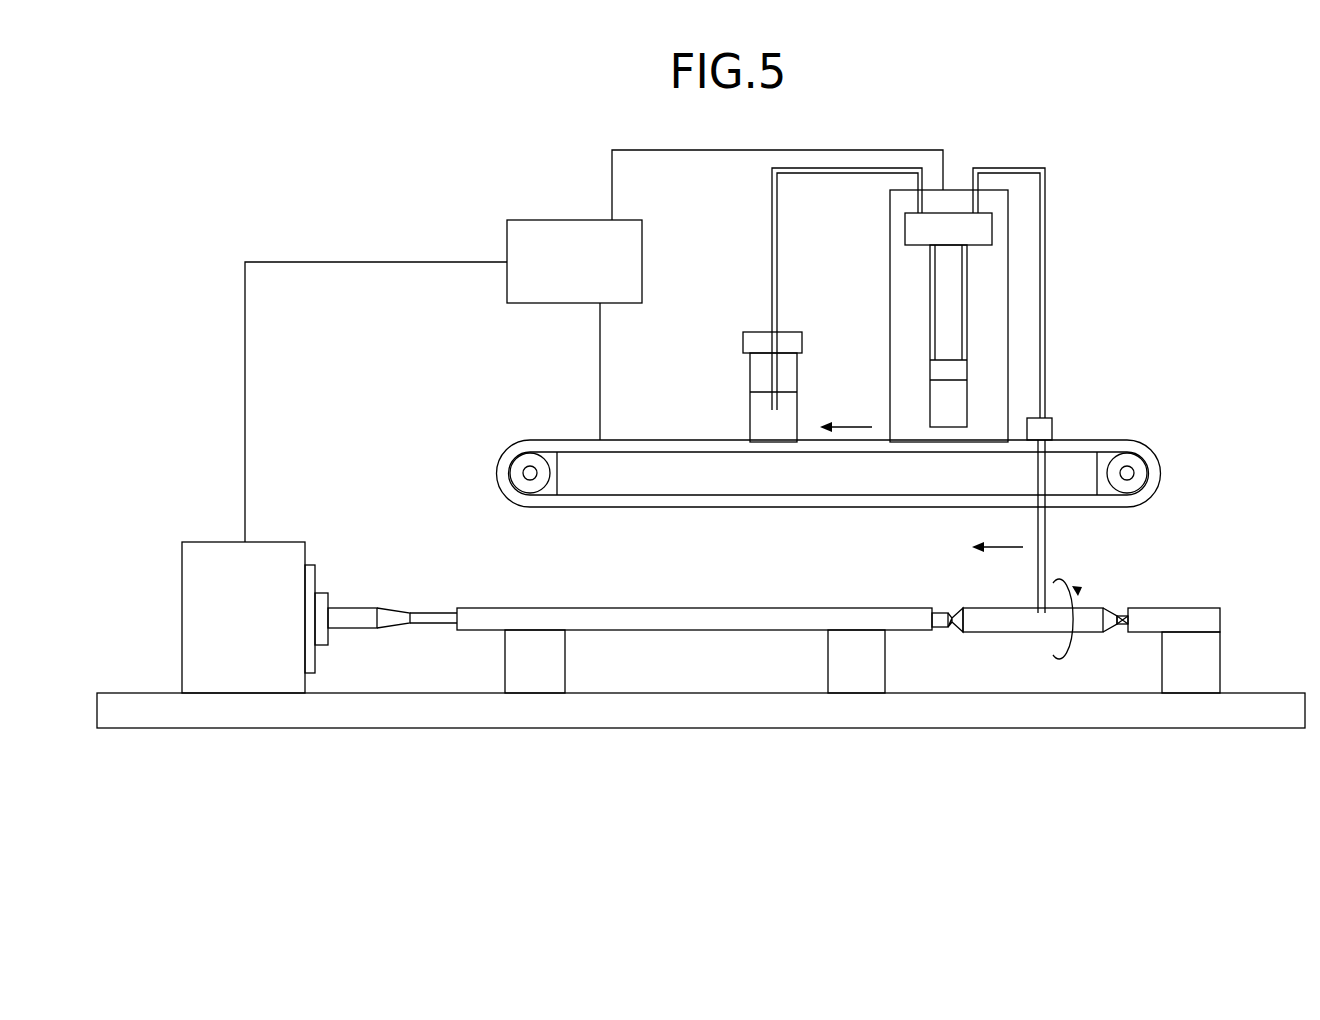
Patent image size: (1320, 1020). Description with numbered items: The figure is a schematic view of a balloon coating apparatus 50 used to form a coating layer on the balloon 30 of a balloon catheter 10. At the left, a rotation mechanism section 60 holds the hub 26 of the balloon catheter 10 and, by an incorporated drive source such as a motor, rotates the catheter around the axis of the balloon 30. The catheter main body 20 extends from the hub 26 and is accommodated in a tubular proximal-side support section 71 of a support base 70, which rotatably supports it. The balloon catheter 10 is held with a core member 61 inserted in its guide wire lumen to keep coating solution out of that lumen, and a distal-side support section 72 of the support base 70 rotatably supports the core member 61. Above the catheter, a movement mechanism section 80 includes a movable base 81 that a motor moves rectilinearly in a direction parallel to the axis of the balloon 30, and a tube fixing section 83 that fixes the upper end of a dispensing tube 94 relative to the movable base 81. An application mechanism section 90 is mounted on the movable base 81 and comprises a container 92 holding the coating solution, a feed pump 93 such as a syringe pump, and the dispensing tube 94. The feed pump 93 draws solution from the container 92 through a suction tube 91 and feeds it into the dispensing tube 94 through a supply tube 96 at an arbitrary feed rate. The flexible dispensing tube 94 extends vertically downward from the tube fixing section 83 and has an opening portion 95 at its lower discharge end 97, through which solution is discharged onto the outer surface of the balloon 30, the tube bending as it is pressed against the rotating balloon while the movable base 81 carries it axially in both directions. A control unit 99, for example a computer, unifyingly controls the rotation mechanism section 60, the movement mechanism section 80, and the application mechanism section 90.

The balloon coating apparatus 50 is at (216, 198).
The control unit 99 is at (563, 214).
The application mechanism section 90 is at (1055, 213).
The suction tube 91 is at (770, 232).
The container 92 is at (750, 360).
The feed pump 93 is at (930, 290).
The supply tube 96 is at (1048, 278).
The tube fixing section 83 is at (1042, 427).
The movable base 81 is at (1115, 447).
The movement mechanism section 80 is at (1149, 444).
The rotation mechanism section 60 is at (193, 550).
The balloon catheter 10 is at (439, 600).
The proximal-side support section 71 is at (533, 618).
The hub 26 is at (357, 618).
The catheter main body 20 is at (935, 612).
The dispensing tube 94 is at (1037, 570).
The discharge end 97 is at (1027, 612).
The core member 61 is at (1140, 617).
The distal-side support section 72 is at (1200, 620).
The balloon 30 is at (1023, 632).
The opening portion 95 is at (1032, 615).
The support base 70 is at (445, 740).